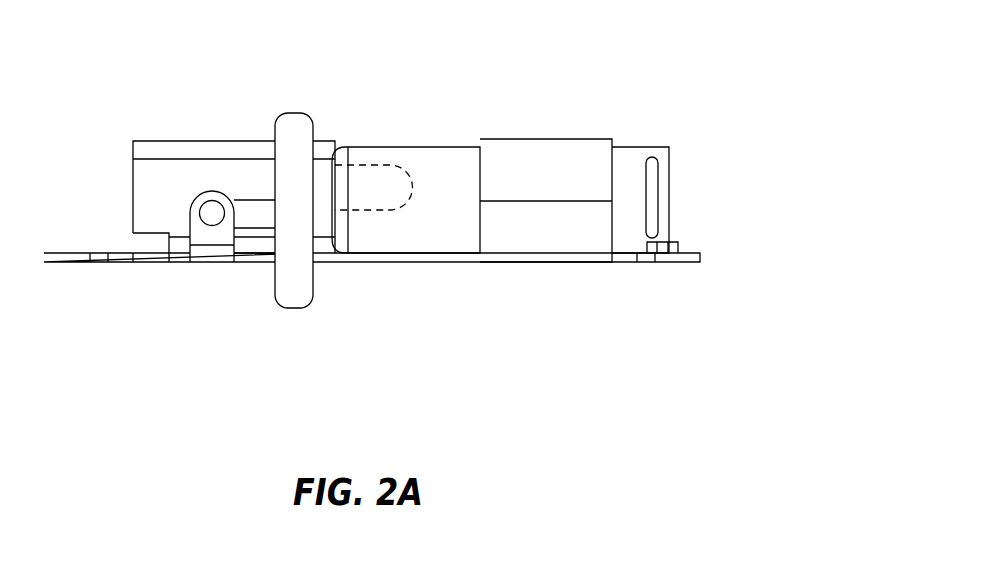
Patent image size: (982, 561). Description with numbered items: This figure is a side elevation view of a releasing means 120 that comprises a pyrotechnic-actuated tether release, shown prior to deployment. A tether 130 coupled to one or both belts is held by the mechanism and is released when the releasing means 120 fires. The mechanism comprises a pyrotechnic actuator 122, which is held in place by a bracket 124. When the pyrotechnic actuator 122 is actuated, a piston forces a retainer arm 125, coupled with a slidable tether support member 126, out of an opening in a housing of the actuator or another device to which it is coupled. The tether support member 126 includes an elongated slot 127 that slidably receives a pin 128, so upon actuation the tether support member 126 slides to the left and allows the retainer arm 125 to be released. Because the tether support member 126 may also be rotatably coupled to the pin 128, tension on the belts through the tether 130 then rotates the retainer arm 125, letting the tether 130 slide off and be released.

The releasing means 120 is at (649, 100).
The pyrotechnic actuator 122 is at (430, 232).
The bracket 124 is at (562, 155).
The retainer arm 125 is at (369, 180).
The tether support member 126 is at (193, 165).
The elongated slot 127 is at (257, 220).
The pin 128 is at (203, 218).
The tether 130 is at (300, 282).